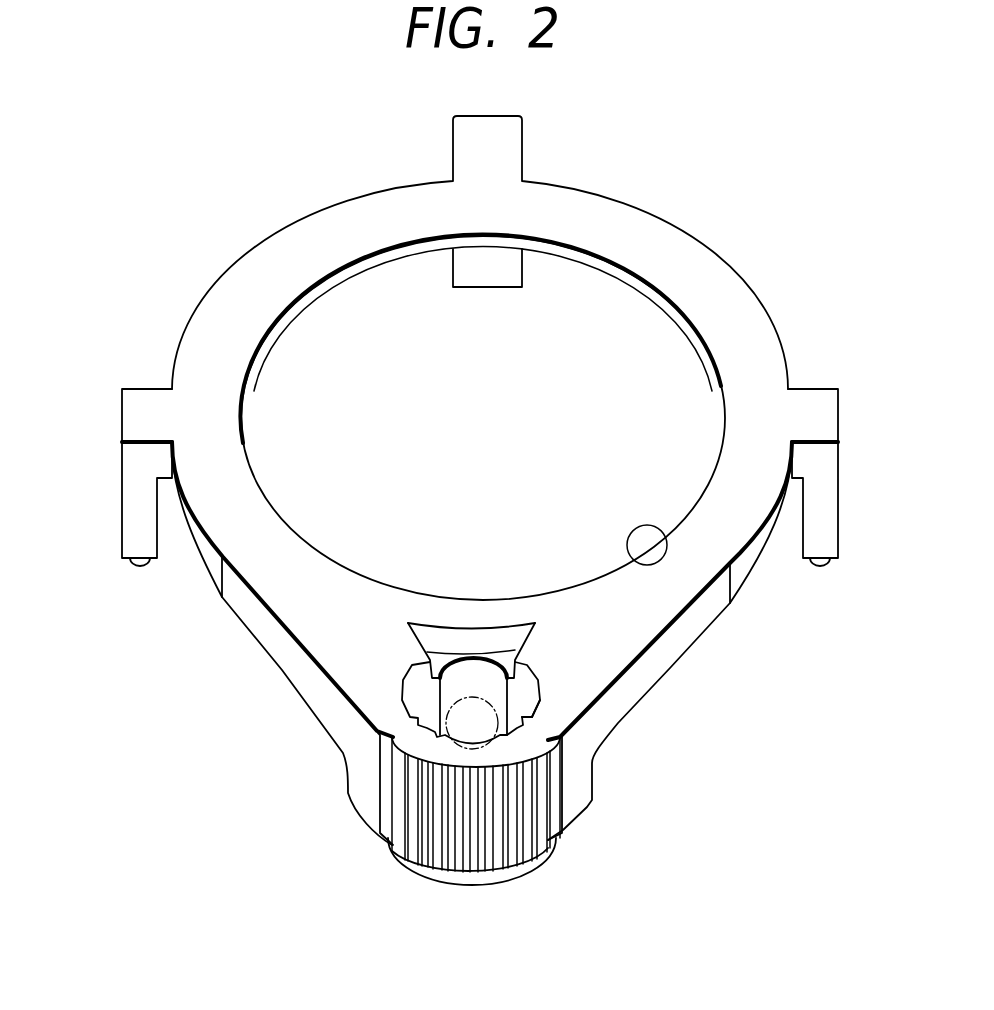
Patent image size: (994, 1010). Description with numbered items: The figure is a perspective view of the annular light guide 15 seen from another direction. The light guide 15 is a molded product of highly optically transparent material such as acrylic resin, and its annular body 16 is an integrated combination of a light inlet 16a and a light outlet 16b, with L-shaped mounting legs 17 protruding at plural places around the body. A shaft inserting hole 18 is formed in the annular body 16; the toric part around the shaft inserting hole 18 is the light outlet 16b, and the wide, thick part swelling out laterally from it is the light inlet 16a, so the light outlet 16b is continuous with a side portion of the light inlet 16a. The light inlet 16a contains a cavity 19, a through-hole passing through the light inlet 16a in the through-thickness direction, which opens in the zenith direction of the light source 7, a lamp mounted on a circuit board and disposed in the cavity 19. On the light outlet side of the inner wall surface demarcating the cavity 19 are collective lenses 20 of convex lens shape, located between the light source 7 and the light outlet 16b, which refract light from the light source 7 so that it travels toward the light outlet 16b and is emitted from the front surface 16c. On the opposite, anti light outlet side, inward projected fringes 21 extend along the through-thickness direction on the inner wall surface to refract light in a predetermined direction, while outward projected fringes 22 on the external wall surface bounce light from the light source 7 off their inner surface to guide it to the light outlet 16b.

The annular light guide 15 is at (471, 473).
The annular body 16 is at (424, 643).
The light inlet 16a is at (313, 693).
The light outlet 16b is at (207, 558).
The front surface 16c is at (710, 290).
The projection 17 is at (510, 278).
The shaft inserting hole 18 is at (657, 560).
The cavity 19 is at (405, 708).
The collective lenses 20 is at (520, 672).
The inward projected fringes 21 is at (533, 723).
The light source 7 is at (520, 688).
The outward projected fringes 22 is at (423, 863).